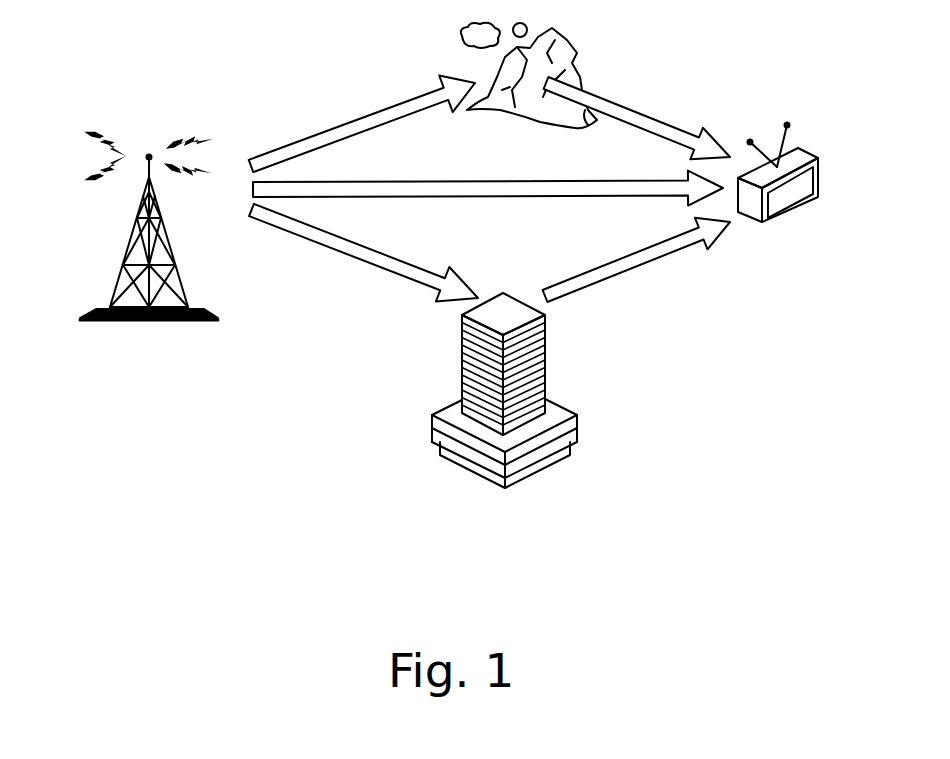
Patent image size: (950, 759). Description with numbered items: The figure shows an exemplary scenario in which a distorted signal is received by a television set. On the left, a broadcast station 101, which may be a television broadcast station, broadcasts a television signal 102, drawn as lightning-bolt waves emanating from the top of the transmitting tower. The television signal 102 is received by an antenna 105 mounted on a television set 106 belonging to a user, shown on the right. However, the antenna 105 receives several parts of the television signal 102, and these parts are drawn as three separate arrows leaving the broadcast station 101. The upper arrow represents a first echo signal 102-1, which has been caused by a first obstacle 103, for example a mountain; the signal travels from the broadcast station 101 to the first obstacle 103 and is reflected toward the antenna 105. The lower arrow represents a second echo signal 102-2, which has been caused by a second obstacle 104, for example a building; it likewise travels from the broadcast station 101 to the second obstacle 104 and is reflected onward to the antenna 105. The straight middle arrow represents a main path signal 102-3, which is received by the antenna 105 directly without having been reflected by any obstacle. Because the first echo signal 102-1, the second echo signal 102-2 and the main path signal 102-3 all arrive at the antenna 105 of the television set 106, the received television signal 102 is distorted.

The broadcast station 101 is at (123, 116).
The television signal 102 is at (92, 138).
The first echo signal 102-1 is at (343, 123).
The second echo signal 102-2 is at (338, 255).
The main path signal 102-3 is at (510, 198).
The first obstacle 103 is at (580, 30).
The second obstacle 104 is at (590, 443).
The antenna 105 is at (752, 138).
The television set 106 is at (816, 132).